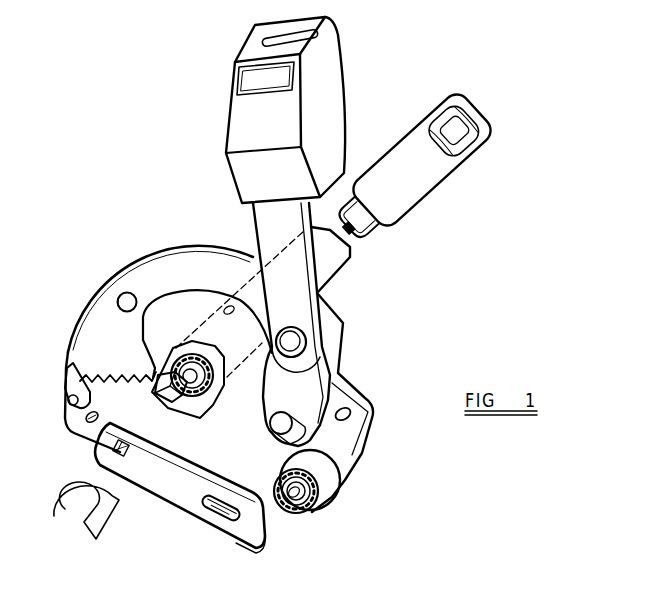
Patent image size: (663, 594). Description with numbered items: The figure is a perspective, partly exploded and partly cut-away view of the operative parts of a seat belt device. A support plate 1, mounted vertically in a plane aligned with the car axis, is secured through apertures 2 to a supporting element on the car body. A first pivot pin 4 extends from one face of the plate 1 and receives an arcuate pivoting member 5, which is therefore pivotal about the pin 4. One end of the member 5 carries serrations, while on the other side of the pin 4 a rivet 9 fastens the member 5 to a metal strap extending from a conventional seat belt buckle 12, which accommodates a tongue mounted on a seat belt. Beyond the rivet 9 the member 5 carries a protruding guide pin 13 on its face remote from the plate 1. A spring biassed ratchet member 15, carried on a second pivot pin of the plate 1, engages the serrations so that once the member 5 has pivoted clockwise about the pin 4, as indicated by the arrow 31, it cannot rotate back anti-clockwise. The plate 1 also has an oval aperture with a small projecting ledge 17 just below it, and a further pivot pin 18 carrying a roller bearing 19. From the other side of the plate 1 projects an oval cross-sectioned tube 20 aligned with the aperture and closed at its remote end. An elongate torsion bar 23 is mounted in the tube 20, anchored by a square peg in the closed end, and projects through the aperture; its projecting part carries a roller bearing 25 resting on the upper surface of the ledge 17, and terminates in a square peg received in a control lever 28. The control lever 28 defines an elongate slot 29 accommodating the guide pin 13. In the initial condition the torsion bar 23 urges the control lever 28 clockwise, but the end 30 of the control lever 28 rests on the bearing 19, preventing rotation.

The support plate 1 is at (355, 447).
The apertures 2 is at (350, 414).
The first pivot pin 4 is at (120, 295).
The arcuate pivoting member 5 is at (190, 253).
The rivet 9 is at (298, 342).
The seat belt buckle 12 is at (368, 76).
The guide pin 13 is at (297, 427).
The spring biassed ratchet member 15 is at (66, 356).
The projecting ledge 17 is at (160, 393).
The further pivot pin 18 is at (288, 503).
The roller bearing 19 is at (327, 487).
The oval cross-sectioned tube 20 is at (415, 190).
The torsion bar 23 is at (375, 228).
The roller bearing 25 is at (240, 323).
The control lever 28 is at (163, 552).
The elongate slot 29 is at (213, 567).
The end of the control lever 30 is at (262, 562).
The arrow 31 is at (101, 562).